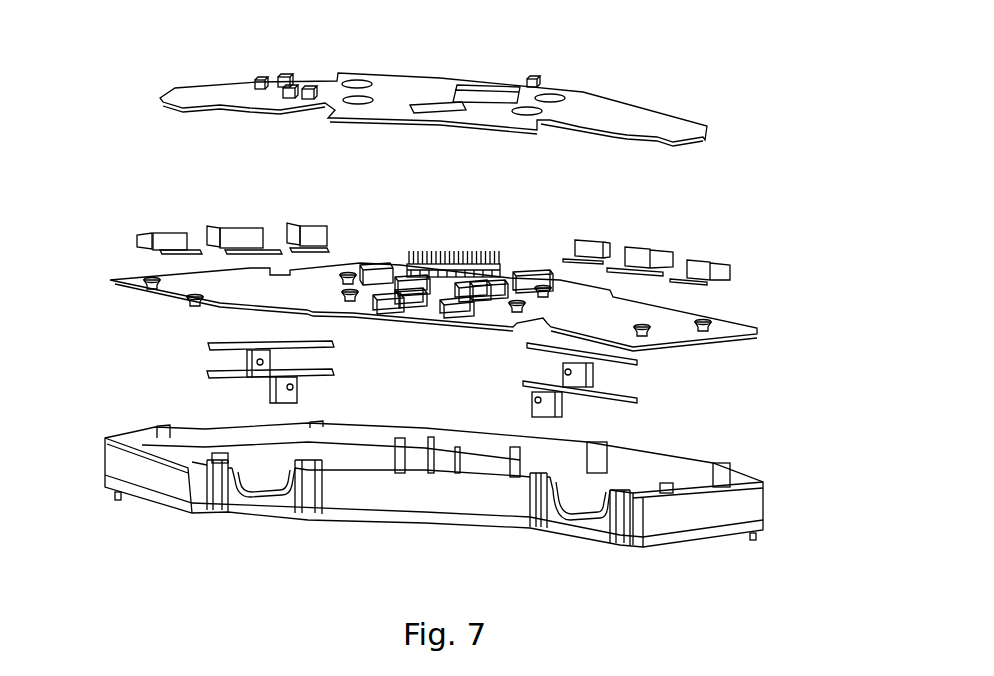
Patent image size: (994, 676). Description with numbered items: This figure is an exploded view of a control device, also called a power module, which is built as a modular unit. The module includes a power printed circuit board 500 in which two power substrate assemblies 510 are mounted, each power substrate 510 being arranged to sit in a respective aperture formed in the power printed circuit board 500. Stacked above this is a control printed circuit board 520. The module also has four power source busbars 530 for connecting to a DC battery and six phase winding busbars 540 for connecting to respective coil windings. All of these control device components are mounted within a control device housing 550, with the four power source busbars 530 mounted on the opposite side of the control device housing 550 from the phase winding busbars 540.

The power printed circuit board 500 is at (757, 330).
The power substrate assembly 510 is at (150, 302).
The control printed circuit board 520 is at (580, 113).
The power source busbar 530 is at (205, 347).
The phase winding busbar 540 is at (277, 225).
The control device housing 550 is at (667, 547).